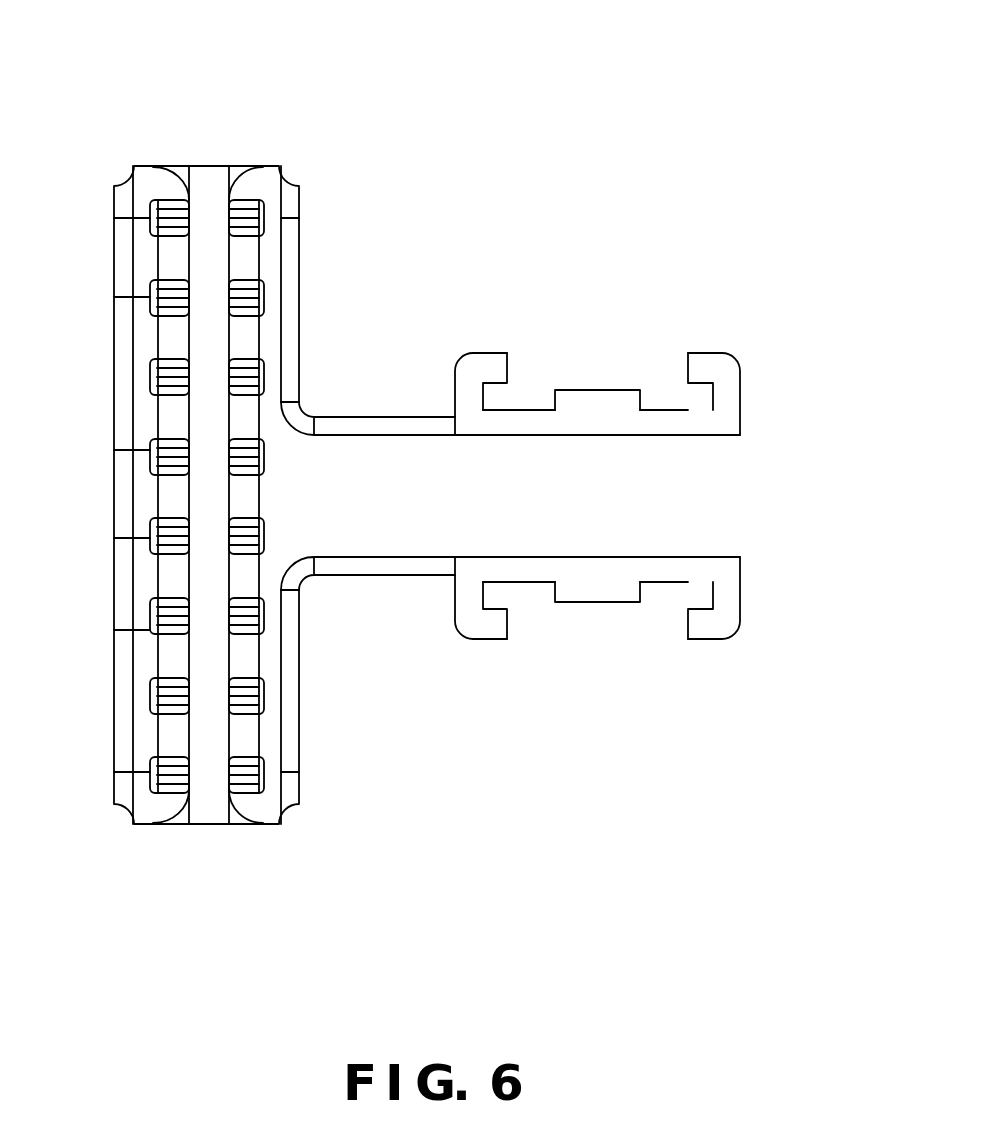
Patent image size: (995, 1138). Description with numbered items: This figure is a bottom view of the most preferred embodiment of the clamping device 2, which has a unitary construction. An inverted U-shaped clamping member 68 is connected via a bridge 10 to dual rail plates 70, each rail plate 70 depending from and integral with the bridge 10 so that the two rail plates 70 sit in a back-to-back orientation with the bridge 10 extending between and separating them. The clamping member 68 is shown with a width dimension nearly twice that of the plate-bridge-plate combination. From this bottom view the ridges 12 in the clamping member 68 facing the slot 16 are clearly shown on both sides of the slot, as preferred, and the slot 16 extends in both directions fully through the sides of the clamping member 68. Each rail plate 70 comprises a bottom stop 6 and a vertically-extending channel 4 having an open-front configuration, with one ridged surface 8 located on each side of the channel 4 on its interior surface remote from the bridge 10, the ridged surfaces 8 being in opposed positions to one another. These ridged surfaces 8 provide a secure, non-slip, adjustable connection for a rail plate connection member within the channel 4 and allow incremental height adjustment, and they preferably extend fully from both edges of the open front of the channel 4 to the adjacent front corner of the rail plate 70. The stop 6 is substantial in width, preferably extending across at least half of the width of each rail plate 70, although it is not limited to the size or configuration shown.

The clamping device 2 is at (667, 98).
The vertically-extending channel 4 is at (672, 367).
The bottom stop 6 is at (573, 378).
The ridged surface 8 is at (498, 420).
The bridge 10 is at (363, 518).
The ridges 12 is at (211, 553).
The slot 16 is at (212, 165).
The clamping member 68 is at (290, 310).
The rail plate 70 is at (758, 417).